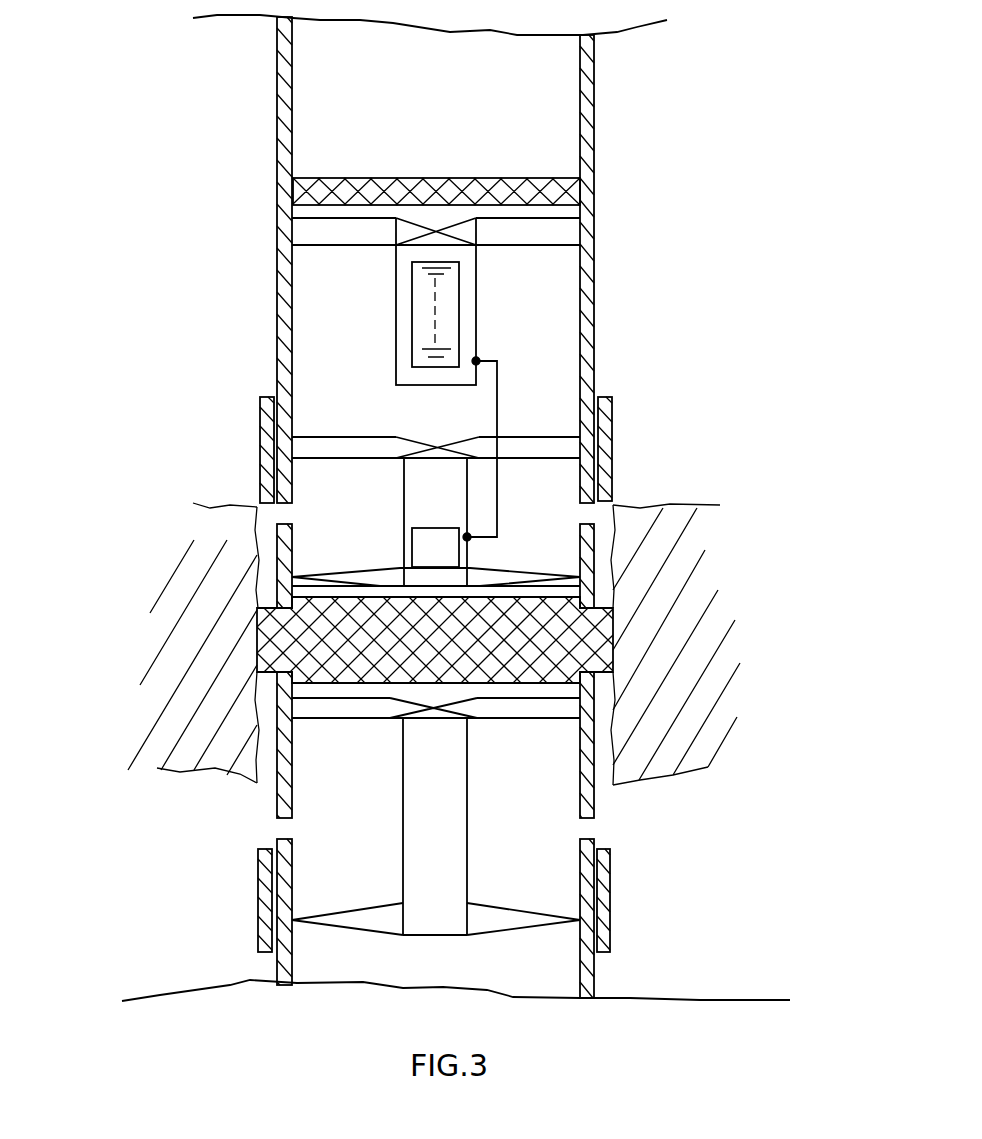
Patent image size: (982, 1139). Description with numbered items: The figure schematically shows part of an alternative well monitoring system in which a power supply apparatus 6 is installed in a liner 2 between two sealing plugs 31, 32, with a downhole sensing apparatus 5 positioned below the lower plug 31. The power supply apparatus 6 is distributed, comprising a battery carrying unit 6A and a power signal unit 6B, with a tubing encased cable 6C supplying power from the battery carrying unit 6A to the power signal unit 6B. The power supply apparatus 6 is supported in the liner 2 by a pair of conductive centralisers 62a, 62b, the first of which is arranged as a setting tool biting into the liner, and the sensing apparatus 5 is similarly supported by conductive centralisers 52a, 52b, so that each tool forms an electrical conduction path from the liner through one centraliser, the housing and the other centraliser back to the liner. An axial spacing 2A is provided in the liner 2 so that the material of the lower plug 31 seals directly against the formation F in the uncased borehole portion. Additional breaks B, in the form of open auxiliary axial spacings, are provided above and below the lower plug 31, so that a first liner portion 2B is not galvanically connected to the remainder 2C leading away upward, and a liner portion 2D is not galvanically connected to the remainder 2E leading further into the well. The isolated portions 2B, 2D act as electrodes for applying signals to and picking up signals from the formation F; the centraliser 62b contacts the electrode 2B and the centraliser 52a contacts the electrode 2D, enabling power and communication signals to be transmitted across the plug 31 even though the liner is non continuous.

The liner 2 is at (290, 118).
The axial spacing 2A is at (645, 620).
The first portion of the liner 2B is at (587, 555).
The remainder of the liner 2C is at (592, 298).
The portion of liner 2D is at (290, 783).
The remainder of the liner 2E is at (285, 882).
The lower plug 31 is at (528, 647).
The sealing plug 32 is at (522, 188).
The downhole sensing apparatus 5 is at (453, 801).
The conductive centraliser 52a is at (322, 710).
The conductive centraliser 52b is at (345, 918).
The power supply apparatus 6 is at (312, 344).
The battery carrying unit 6A is at (478, 288).
The power signal unit 6B is at (403, 487).
The cable 6C is at (497, 383).
The conductive centraliser 62a is at (336, 447).
The conductive centraliser 62b is at (347, 573).
The formation F is at (213, 664).
The breaks B is at (621, 509).